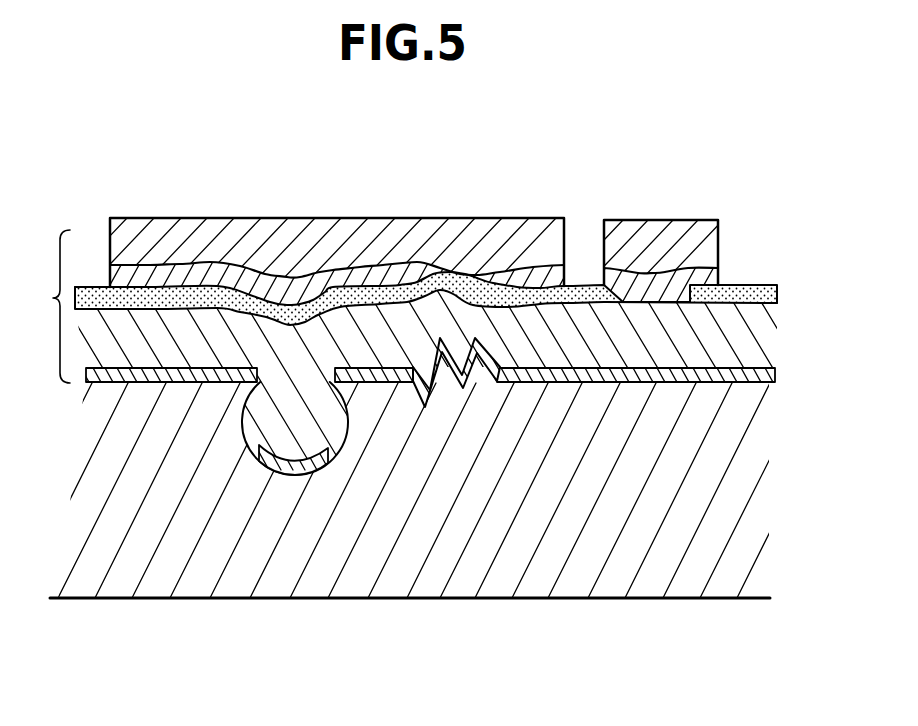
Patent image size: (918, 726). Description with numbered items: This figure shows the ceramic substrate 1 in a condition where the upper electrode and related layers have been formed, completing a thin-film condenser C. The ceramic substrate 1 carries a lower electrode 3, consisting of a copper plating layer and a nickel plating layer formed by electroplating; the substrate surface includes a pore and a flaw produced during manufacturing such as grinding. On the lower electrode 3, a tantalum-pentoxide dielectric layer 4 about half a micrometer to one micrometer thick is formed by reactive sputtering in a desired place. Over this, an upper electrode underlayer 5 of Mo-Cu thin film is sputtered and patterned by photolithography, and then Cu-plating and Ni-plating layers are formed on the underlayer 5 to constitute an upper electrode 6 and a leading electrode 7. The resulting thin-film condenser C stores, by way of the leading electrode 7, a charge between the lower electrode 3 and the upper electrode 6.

The ceramic substrate 1 is at (453, 588).
The lower electrode 3 is at (517, 323).
The dielectric layer 4 is at (383, 293).
The upper electrode underlayer 5 is at (301, 280).
The upper electrode 6 is at (204, 232).
The leading electrode 7 is at (678, 243).
The thin-film condenser C is at (48, 306).